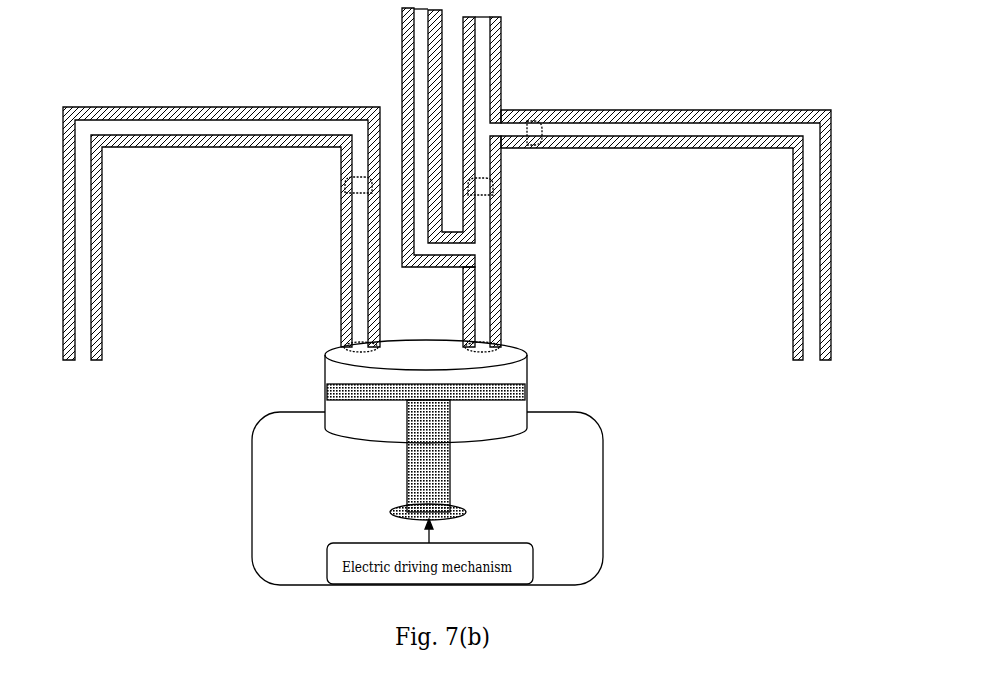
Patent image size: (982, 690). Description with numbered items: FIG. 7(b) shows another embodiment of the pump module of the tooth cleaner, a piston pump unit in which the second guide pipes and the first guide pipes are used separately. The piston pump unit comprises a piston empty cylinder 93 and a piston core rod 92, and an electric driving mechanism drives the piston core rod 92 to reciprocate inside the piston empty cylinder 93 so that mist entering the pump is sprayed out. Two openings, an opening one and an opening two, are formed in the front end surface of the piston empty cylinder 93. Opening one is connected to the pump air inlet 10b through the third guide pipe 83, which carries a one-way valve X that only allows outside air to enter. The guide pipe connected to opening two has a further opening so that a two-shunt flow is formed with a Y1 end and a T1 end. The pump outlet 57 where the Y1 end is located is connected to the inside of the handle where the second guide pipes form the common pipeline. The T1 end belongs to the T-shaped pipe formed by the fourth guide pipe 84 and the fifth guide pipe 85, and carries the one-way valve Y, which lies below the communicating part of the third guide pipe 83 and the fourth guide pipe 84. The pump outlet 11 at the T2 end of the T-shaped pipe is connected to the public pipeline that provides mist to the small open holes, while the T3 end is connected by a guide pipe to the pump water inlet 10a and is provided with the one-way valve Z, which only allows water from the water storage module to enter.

The third guide pipe 83 is at (131, 108).
The fourth guide pipe 84 is at (403, 59).
The fifth guide pipe 85 is at (641, 109).
The pump outlet 11 is at (482, 182).
The pump outlet 57 is at (420, 33).
The piston core rod 92 is at (456, 480).
The piston empty cylinder 93 is at (533, 378).
The pump water inlet 10a is at (815, 385).
The pump air inlet 10b is at (80, 385).
The one-way valve X is at (341, 188).
The one-way valve Y is at (505, 187).
The one-way valve Z is at (534, 109).
The T1 end T1 is at (516, 211).
The T2 end T2 is at (510, 42).
The T3 end T3 is at (577, 102).
The Y1 end Y1 is at (428, 278).